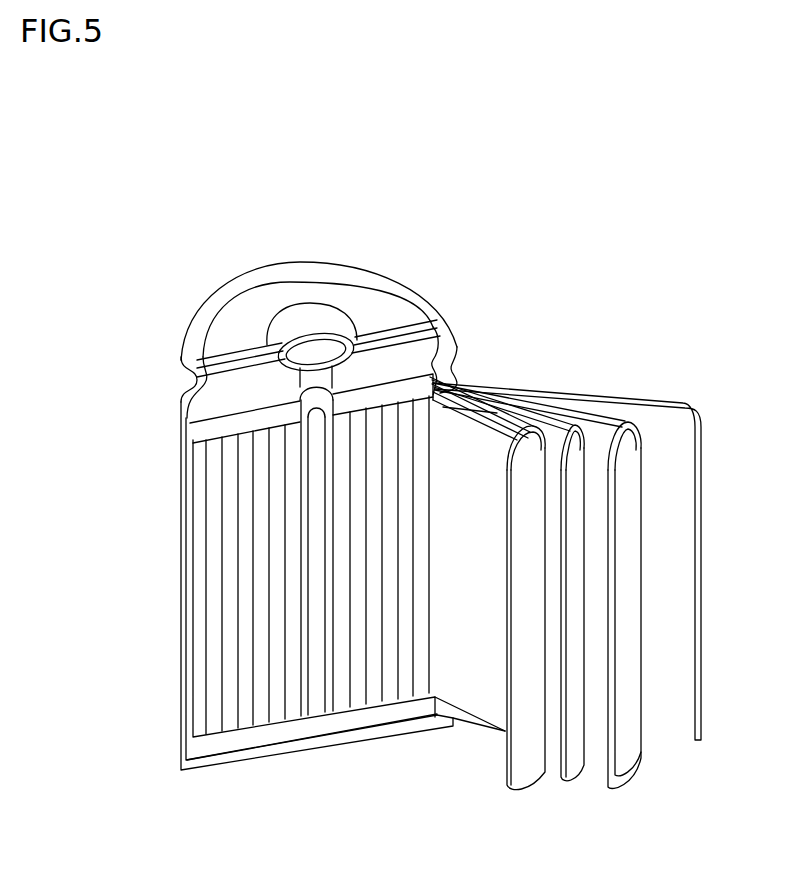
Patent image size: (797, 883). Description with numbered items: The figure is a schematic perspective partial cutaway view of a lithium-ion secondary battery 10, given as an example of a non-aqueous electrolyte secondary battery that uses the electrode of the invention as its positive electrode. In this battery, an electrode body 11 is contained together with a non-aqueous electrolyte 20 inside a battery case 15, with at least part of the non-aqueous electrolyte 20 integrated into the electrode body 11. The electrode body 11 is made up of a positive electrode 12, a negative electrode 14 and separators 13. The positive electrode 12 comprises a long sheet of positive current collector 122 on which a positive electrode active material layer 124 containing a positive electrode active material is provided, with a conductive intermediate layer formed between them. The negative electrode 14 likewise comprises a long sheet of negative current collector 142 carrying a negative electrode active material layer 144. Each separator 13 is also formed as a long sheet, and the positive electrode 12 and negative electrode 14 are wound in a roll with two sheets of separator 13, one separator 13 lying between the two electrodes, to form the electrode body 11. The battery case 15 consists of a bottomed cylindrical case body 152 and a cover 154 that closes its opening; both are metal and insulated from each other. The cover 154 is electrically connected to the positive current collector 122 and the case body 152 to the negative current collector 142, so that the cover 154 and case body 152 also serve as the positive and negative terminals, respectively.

The lithium-ion secondary battery 10 is at (465, 184).
The electrode body 11 is at (205, 673).
The positive electrode 12 is at (512, 795).
The separator 13 is at (679, 397).
The negative electrode 14 is at (620, 790).
The battery case 15 is at (177, 503).
The non-aqueous electrolyte 20 is at (222, 608).
The positive current collector 122 is at (512, 405).
The positive electrode active material layer 124 is at (522, 425).
The negative current collector 142 is at (640, 772).
The negative electrode active material layer 144 is at (633, 727).
The case body 152 is at (310, 742).
The cover 154 is at (308, 313).